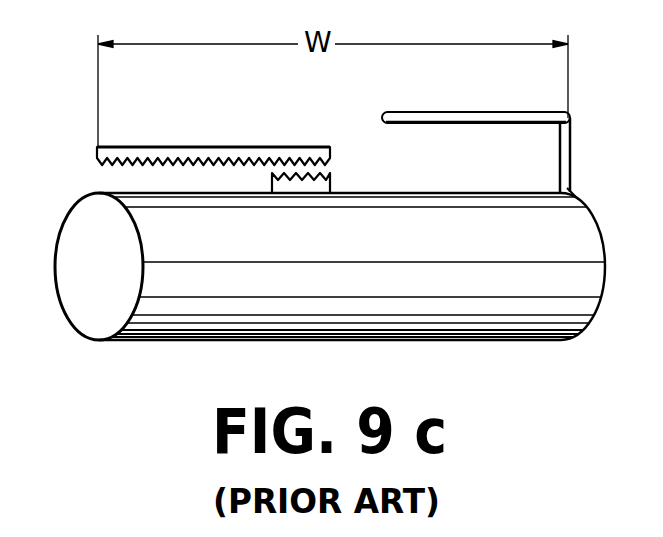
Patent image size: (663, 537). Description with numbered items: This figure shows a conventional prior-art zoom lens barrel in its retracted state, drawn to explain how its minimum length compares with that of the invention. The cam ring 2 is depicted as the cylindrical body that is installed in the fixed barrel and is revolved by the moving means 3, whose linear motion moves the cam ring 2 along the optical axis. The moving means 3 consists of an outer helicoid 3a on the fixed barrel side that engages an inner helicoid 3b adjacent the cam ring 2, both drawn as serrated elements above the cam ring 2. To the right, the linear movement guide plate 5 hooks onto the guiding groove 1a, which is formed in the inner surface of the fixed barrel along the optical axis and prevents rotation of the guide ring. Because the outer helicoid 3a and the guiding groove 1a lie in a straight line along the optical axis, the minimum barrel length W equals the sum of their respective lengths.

The guiding groove 1a is at (458, 113).
The cam ring 2 is at (68, 213).
The moving means 3 is at (213, 106).
The outer helicoid 3a is at (172, 148).
The inner helicoid 3b is at (318, 183).
The linear movement guide plate 5 is at (560, 150).